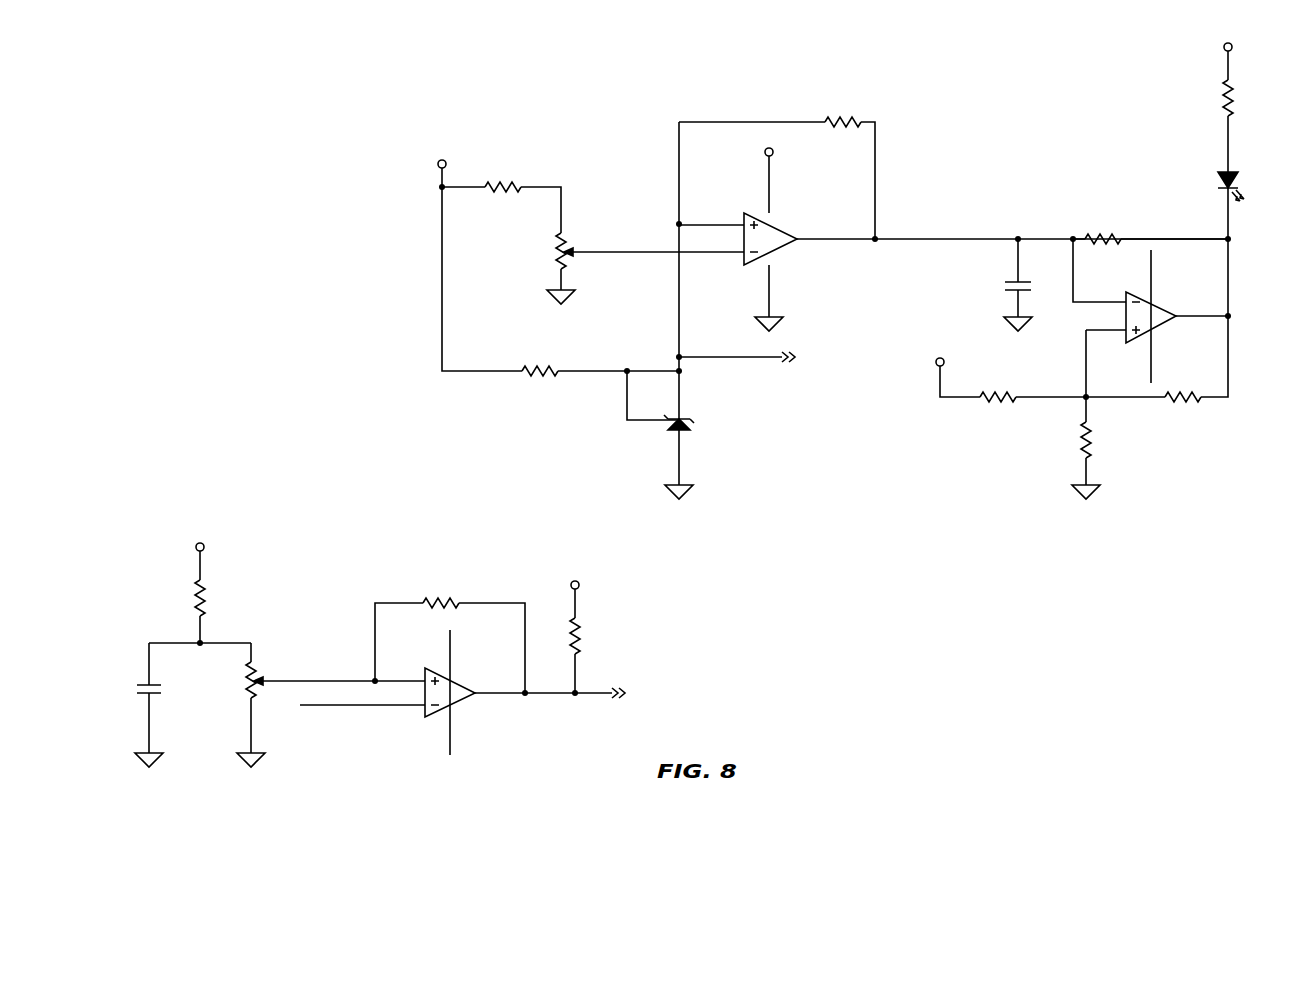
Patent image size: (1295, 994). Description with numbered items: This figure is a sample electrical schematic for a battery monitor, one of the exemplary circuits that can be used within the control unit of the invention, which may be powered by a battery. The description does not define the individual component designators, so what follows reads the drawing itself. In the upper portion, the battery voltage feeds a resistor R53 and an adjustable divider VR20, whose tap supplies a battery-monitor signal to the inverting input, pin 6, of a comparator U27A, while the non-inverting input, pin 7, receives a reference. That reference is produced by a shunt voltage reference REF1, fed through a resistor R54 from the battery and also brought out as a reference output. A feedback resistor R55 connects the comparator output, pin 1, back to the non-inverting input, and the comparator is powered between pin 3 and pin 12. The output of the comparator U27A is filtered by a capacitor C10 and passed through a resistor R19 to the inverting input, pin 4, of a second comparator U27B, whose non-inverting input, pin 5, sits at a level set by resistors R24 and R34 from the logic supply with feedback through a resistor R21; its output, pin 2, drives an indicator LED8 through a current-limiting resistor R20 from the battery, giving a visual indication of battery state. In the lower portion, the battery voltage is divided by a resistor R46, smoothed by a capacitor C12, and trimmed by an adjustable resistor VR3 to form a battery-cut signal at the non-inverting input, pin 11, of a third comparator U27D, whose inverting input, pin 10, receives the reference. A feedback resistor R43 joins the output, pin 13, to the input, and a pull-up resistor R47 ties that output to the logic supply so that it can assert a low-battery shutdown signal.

The resistor 27K R53 is at (490, 184).
The variable resistor 20Kohm VR20 is at (617, 266).
The resistor 1.0M R55 is at (777, 167).
The comparator LM339A U27A is at (953, 229).
The voltage reference TL431B REF1 is at (743, 422).
The resistor 3.32K R54 is at (560, 294).
The capacitor 1uF C10 is at (1035, 283).
The resistor 100K R19 is at (1149, 242).
The comparator LM339A U27B is at (1152, 318).
The resistor 100K R24 is at (1004, 382).
The resistor 100K R34 is at (1101, 448).
The resistor 100K R21 is at (1157, 372).
The resistor 1K R20 is at (1235, 97).
The red LED LED8 is at (1251, 238).
The resistor 27K R46 is at (229, 584).
The capacitor 1uF C12 is at (173, 705).
The variable resistor 20Kohm VR3 is at (305, 705).
The resistor 1.0M R43 is at (450, 637).
The comparator LM339A U27D is at (526, 691).
The resistor 10K R47 is at (586, 626).
The comparator U27A output pin 1 is at (811, 249).
The comparator U27B output pin 2 is at (1191, 306).
The comparator supply pin 3 is at (763, 205).
The comparator U27B inverting input pin 4 is at (1110, 297).
The comparator U27B non-inverting input pin 5 is at (1110, 324).
The comparator U27A inverting input pin 6 is at (736, 243).
The comparator U27A non-inverting input pin 7 is at (736, 216).
The comparator U27D inverting input pin 10 is at (415, 695).
The comparator U27D non-inverting input pin 11 is at (415, 671).
The comparator ground pin 12 is at (760, 276).
The comparator U27D output pin 13 is at (490, 683).